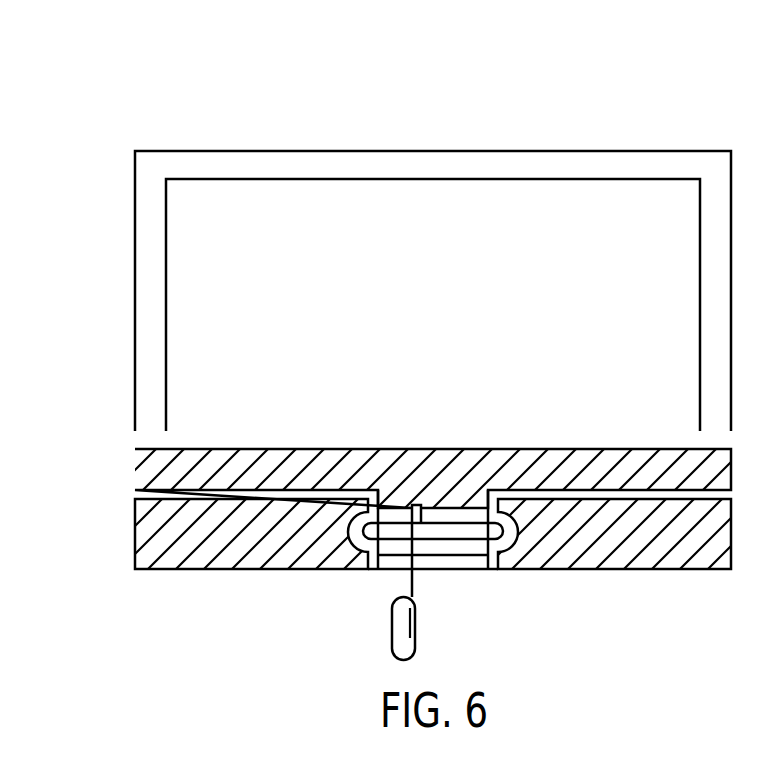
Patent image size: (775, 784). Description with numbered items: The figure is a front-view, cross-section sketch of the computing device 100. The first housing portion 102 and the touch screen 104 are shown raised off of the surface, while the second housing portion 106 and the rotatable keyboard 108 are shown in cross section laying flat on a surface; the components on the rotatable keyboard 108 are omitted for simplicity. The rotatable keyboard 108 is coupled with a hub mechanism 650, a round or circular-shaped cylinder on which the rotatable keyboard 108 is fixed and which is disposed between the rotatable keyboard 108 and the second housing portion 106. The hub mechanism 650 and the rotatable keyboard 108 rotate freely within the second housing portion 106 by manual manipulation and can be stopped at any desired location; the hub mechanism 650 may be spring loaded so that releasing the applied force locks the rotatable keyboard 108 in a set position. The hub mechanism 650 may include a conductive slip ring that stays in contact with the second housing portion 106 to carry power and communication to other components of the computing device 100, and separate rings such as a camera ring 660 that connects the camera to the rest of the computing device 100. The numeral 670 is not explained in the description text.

The computing device 100 is at (300, 93).
The first housing portion 102 is at (152, 227).
The touch screen 104 is at (205, 287).
The second housing portion 106 is at (148, 532).
The rotatable keyboard 108 is at (148, 472).
The hub mechanism 650 is at (390, 532).
The camera ring 660 is at (465, 532).
The pin 670 is at (416, 512).